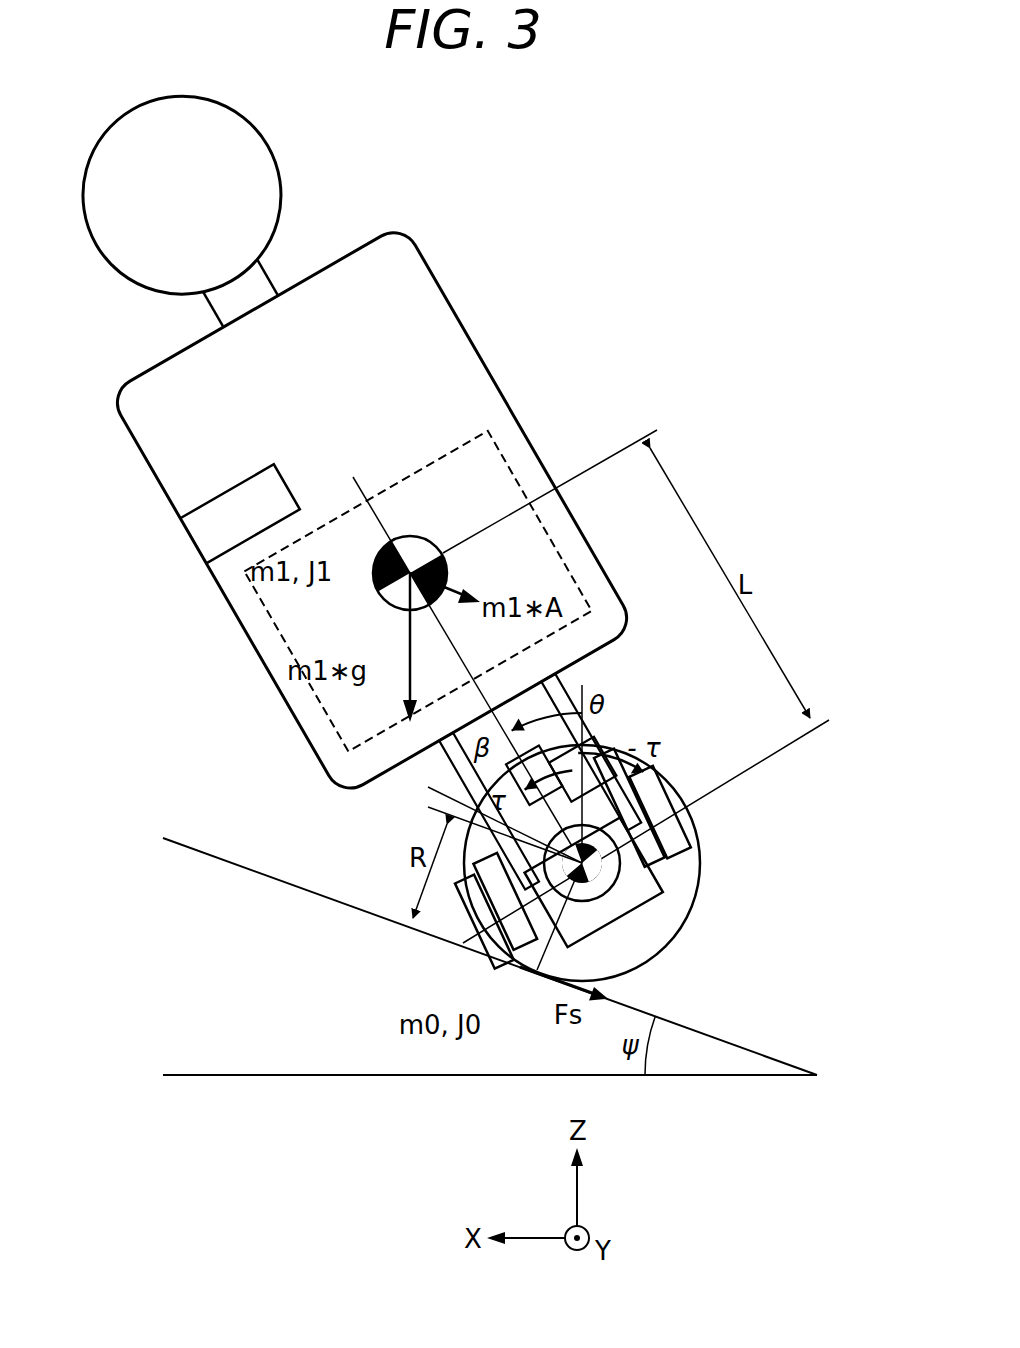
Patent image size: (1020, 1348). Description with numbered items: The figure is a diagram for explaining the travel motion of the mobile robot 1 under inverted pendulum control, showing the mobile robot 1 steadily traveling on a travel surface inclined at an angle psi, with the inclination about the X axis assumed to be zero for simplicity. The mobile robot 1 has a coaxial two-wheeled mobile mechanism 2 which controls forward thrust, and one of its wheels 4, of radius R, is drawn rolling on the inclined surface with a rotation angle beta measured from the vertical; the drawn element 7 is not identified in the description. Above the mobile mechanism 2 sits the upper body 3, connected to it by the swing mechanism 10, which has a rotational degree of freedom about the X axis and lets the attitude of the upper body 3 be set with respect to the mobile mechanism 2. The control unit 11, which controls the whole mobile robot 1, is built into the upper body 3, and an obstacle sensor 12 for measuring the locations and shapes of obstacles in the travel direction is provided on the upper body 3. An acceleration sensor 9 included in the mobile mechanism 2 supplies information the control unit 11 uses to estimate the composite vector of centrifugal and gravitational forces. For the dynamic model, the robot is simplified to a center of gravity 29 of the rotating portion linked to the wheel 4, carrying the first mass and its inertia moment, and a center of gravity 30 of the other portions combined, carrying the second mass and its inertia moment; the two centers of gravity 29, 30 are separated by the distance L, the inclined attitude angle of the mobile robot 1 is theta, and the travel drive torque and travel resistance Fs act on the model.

The mobile robot 1 is at (408, 272).
The coaxial two-wheeled mobile mechanism 2 is at (665, 946).
The upper body 3 is at (445, 338).
The wheel 4 is at (700, 850).
The motor 7 is at (598, 913).
The acceleration sensor 9 is at (600, 748).
The swing mechanism 10 is at (468, 930).
The control unit 11 is at (280, 633).
The obstacle sensor 12 is at (197, 541).
The center of gravity of a rotating portion 29 is at (505, 905).
The center of gravity of other portions 30 is at (418, 548).